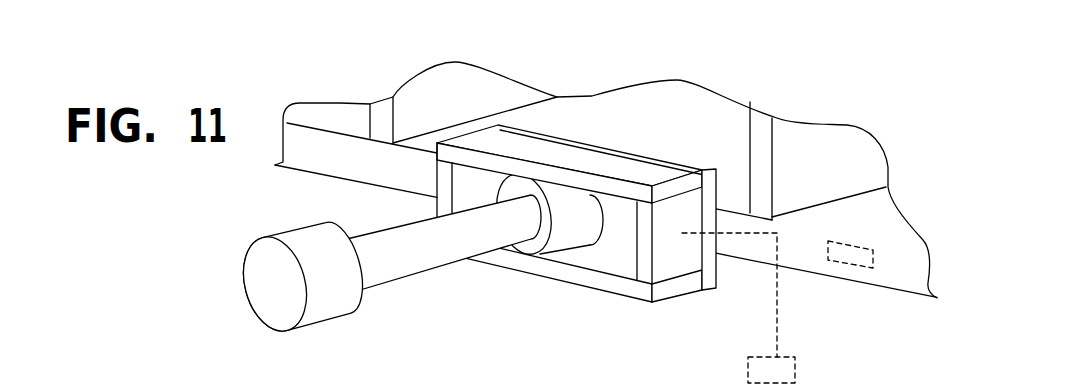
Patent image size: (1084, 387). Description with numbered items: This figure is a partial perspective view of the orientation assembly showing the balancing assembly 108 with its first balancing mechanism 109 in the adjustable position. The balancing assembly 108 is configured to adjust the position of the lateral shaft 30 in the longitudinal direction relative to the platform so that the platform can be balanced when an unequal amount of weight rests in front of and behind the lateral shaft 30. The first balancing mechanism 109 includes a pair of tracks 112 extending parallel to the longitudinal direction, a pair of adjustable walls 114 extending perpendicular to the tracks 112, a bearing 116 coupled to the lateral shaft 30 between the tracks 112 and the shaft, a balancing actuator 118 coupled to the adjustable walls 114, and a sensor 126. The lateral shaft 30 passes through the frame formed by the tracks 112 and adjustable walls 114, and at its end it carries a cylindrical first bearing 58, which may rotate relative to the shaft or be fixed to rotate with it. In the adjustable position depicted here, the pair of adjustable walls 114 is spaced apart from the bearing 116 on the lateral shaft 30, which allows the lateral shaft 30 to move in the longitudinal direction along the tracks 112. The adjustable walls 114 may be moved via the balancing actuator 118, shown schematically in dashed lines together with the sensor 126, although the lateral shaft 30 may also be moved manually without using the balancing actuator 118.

The balancing assembly 108 is at (372, 59).
The first balancing mechanism 109 is at (519, 199).
The pair of tracks 112 is at (652, 172).
The pair of adjustable walls 114 is at (443, 177).
The bearing 116 is at (565, 233).
The lateral shaft 30 is at (415, 286).
The first bearing 58 is at (327, 298).
The sensor 126 is at (875, 265).
The balancing actuator 118 is at (797, 375).